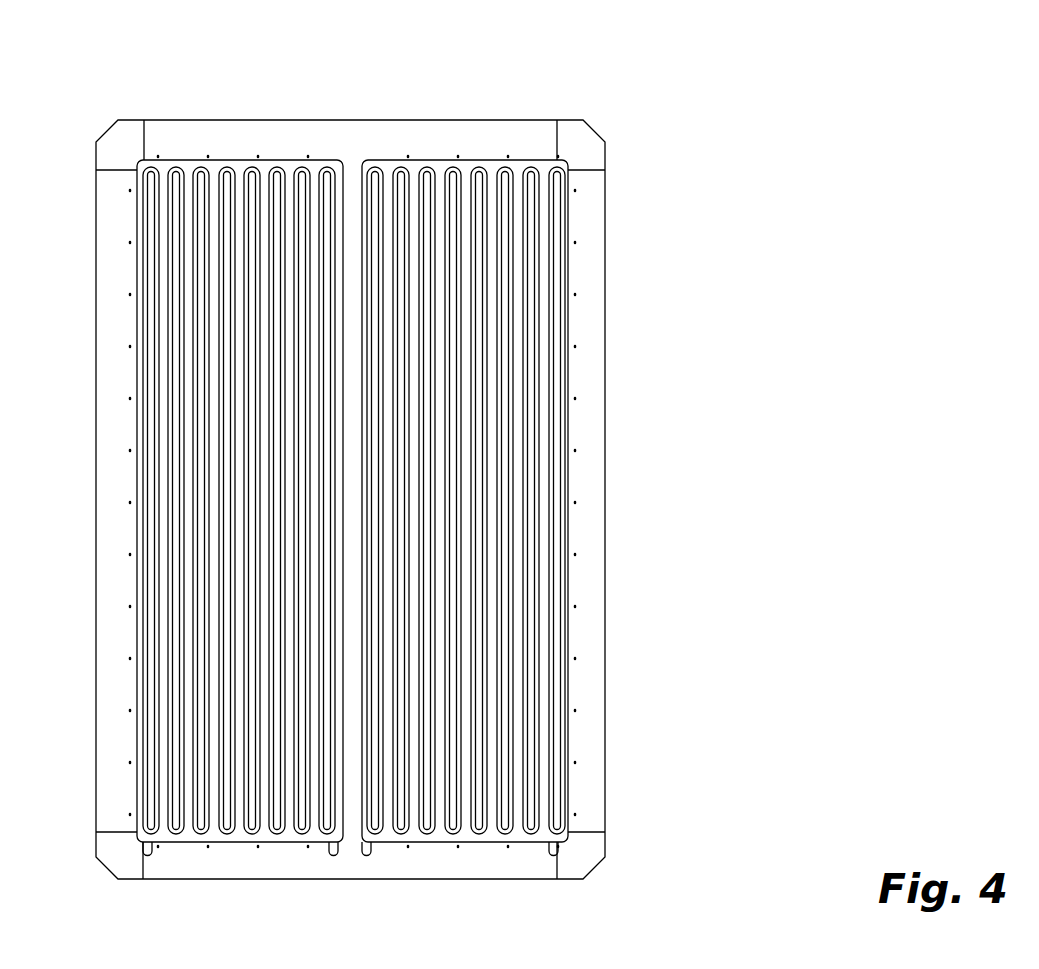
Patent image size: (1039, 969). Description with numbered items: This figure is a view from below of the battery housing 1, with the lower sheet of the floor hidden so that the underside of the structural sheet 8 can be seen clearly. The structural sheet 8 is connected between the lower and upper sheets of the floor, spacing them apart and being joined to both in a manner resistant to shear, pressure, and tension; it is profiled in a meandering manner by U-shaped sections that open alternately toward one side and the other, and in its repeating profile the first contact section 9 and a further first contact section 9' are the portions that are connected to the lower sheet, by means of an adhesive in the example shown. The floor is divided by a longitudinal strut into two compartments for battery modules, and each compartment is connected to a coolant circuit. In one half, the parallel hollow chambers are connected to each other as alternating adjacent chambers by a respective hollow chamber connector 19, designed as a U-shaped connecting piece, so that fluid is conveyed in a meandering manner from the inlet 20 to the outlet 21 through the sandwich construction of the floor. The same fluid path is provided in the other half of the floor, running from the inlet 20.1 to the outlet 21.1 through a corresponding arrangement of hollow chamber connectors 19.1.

The battery housing 1 is at (474, 489).
The structural sheet 8 is at (353, 212).
The first contact section 9 is at (459, 436).
The first contact section 9' is at (492, 436).
The hollow chamber connector 19 is at (445, 163).
The hollow chamber connector 19.1 is at (237, 843).
The inlet 20 is at (367, 859).
The inlet 20.1 is at (337, 859).
The outlet 21 is at (557, 859).
The outlet 21.1 is at (150, 859).